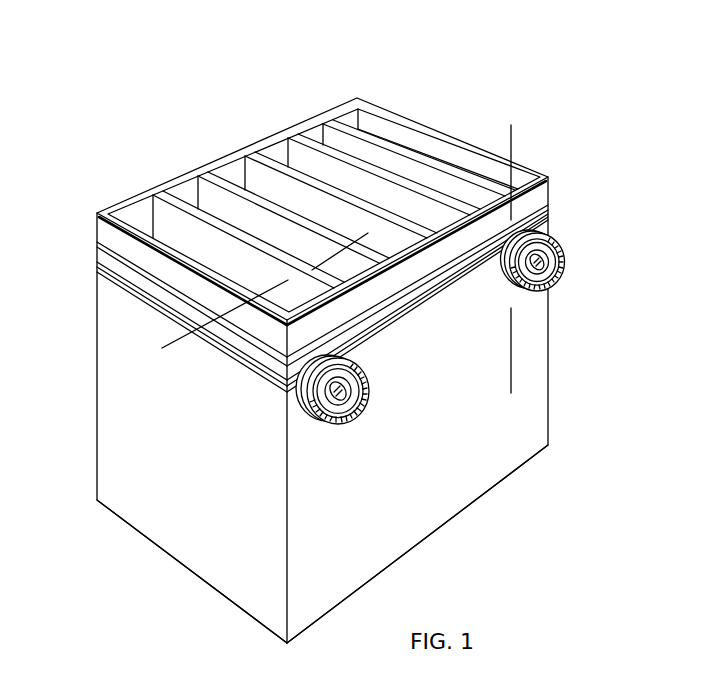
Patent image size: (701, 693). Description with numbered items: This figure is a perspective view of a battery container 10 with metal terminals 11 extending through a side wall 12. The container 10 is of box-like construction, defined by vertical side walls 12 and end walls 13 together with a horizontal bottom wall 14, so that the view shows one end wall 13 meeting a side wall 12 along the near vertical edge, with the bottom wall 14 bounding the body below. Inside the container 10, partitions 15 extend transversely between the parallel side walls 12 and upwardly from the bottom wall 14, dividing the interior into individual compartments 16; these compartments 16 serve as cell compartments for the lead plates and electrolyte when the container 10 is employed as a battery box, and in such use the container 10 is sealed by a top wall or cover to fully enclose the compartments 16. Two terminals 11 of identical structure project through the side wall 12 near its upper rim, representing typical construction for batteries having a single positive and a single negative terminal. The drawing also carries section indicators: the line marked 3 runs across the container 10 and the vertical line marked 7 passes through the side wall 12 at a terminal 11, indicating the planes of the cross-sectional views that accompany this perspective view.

The container 10 is at (216, 642).
The terminals 11 is at (563, 273).
The side wall 12 is at (428, 515).
The end walls 13 is at (210, 550).
The bottom wall 14 is at (378, 581).
The partitions 15 is at (204, 167).
The compartments 16 is at (138, 220).
The section line 3- 3 is at (342, 230).
The section line 7- 7 is at (497, 142).